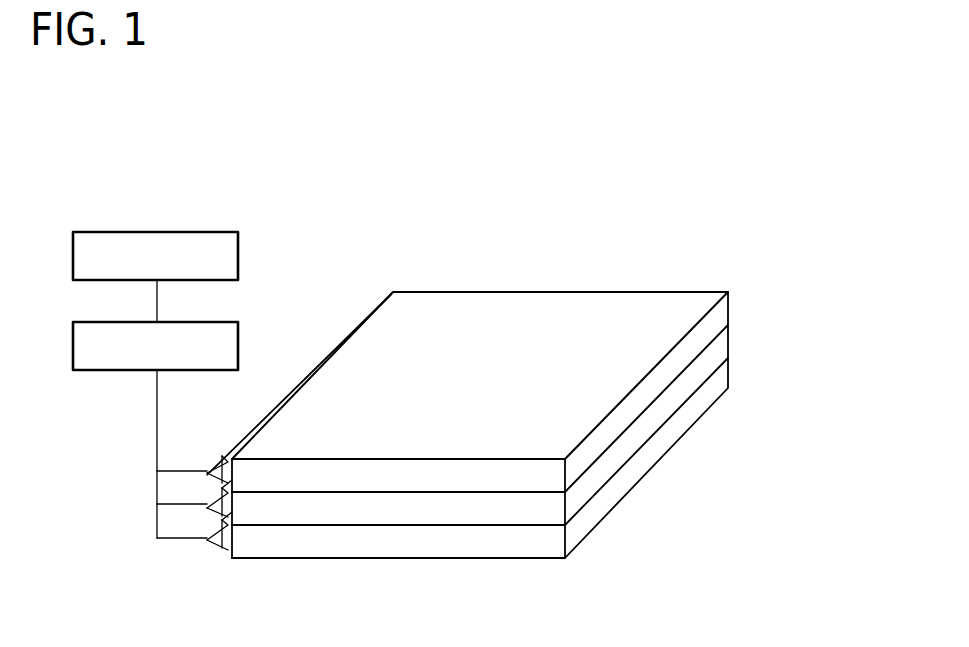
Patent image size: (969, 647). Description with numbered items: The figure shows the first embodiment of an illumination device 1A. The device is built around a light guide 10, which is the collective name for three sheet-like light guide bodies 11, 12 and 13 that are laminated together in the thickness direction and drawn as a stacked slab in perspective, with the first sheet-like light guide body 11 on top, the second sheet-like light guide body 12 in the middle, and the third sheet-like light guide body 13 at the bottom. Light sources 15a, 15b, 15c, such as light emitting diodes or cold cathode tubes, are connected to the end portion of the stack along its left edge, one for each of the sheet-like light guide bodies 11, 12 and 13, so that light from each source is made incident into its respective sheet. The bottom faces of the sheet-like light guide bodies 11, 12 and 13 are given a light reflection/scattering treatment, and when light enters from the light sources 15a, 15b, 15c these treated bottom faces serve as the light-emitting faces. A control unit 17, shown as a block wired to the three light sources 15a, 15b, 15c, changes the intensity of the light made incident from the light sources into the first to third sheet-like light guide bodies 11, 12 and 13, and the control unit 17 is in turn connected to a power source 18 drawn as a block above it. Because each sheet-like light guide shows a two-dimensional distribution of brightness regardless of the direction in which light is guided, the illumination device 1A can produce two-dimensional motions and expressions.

The illumination device 1A is at (365, 222).
The light guide 10 is at (820, 267).
The first sheet-like light guide body 11 is at (728, 303).
The second sheet-like light guide body 12 is at (728, 337).
The third sheet-like light guide body 13 is at (728, 372).
The light source 15a is at (298, 380).
The light source 15b is at (215, 512).
The light source 15c is at (213, 550).
The control unit 17 is at (215, 321).
The power source 18 is at (165, 232).